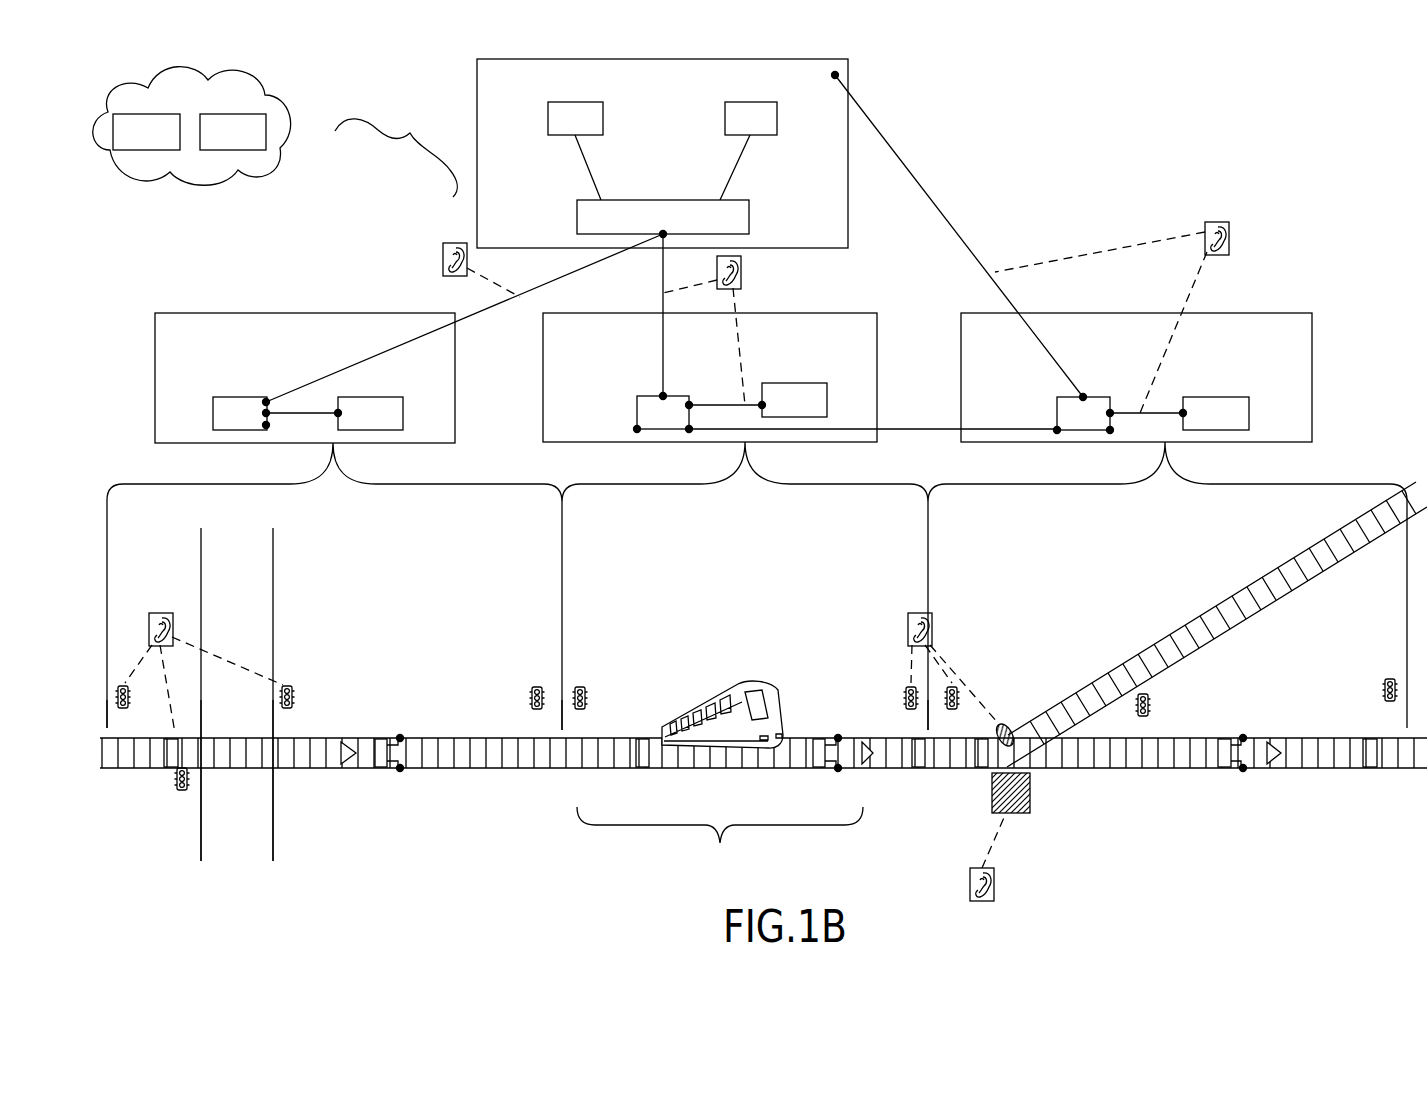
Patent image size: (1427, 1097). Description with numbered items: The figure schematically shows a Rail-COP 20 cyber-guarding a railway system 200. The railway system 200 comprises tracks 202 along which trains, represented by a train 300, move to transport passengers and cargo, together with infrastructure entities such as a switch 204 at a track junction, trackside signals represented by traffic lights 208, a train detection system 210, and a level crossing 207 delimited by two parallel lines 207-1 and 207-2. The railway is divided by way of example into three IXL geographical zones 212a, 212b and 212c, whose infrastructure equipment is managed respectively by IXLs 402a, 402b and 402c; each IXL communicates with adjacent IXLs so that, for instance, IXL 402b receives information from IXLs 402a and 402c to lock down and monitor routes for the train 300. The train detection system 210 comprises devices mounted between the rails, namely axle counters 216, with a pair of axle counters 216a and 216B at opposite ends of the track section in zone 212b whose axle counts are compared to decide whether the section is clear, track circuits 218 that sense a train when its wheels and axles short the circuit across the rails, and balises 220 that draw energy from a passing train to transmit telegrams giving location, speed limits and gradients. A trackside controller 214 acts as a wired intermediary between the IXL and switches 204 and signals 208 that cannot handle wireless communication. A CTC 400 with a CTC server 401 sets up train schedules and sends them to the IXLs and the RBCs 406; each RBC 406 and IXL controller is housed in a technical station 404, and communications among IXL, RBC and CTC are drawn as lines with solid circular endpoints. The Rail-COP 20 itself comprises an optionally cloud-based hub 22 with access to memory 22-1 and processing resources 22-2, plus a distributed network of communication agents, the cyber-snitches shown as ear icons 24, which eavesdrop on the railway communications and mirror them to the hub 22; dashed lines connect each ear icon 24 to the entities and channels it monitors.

The Rail-COP 20 is at (411, 128).
The hub 22 is at (232, 126).
The memory 22-1 is at (233, 132).
The processing resources 22-2 is at (146, 132).
The ear icons 24 is at (443, 258).
The railway system 200 is at (1180, 115).
The tracks 202 is at (466, 738).
The switch 204 is at (1005, 724).
The level crossing 207 is at (257, 781).
The first delimiting line 207-1 is at (201, 848).
The second delimiting line 207-2 is at (273, 818).
The traffic lights 208 is at (957, 684).
The train detection system 210 is at (720, 841).
The IXL geographical zone 212a is at (237, 484).
The IXL geographical zone 212b is at (658, 484).
The IXL geographical zone 212c is at (1035, 484).
The trackside controller 214 is at (990, 790).
The axle counter 216 is at (170, 748).
The axle counter 216a is at (641, 738).
The axle counter 216B is at (916, 738).
The track circuit 218 is at (808, 750).
The balise 220 is at (348, 735).
The train 300 is at (705, 690).
The CTC 400 is at (674, 211).
The CTC server 401 is at (680, 200).
The IXL 402a is at (253, 397).
The IXL 402b is at (650, 396).
The IXL 402c is at (1068, 397).
The technical station 404 is at (1093, 312).
The RBC 406 is at (1240, 397).